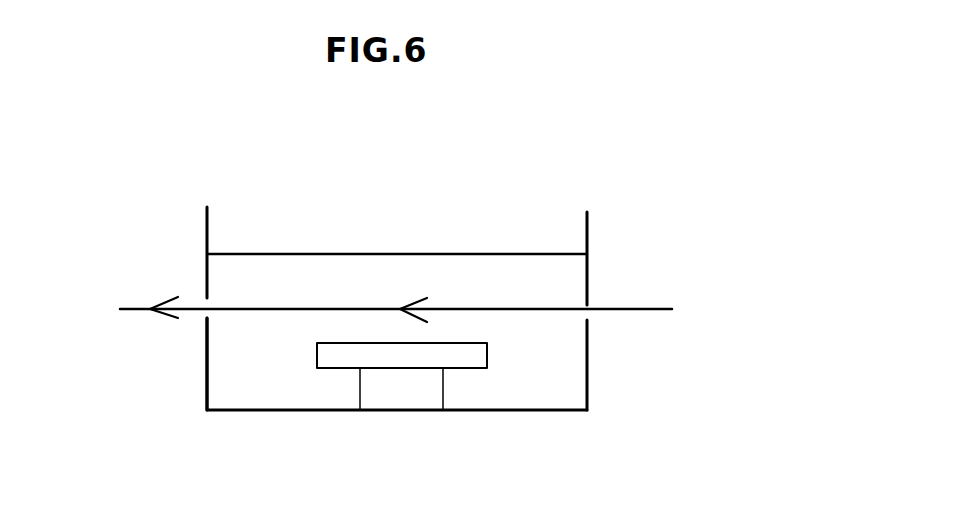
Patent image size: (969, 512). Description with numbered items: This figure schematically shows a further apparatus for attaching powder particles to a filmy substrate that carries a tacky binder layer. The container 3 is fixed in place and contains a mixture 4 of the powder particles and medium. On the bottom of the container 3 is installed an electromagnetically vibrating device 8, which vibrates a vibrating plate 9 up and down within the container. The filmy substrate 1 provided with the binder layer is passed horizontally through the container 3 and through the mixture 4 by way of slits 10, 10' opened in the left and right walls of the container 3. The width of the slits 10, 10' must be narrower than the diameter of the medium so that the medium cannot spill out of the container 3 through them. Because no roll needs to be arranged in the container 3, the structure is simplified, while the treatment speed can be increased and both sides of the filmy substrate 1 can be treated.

The filmy substrate 1 is at (638, 309).
The container 3 is at (589, 237).
The mixture of powder particles and medium 4 is at (352, 282).
The electromagnetically vibrating device 8 is at (395, 392).
The vibrating plate 9 is at (465, 355).
The slit 10 is at (643, 365).
The slit 10' is at (148, 362).